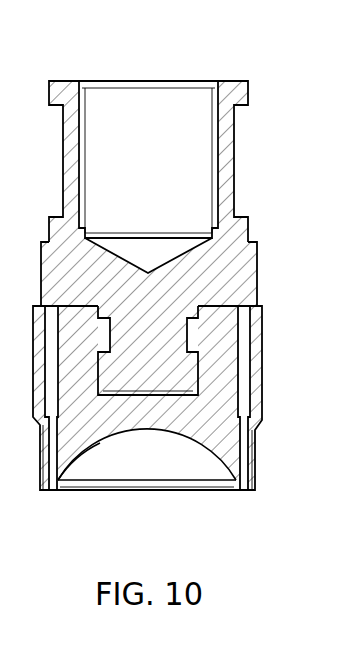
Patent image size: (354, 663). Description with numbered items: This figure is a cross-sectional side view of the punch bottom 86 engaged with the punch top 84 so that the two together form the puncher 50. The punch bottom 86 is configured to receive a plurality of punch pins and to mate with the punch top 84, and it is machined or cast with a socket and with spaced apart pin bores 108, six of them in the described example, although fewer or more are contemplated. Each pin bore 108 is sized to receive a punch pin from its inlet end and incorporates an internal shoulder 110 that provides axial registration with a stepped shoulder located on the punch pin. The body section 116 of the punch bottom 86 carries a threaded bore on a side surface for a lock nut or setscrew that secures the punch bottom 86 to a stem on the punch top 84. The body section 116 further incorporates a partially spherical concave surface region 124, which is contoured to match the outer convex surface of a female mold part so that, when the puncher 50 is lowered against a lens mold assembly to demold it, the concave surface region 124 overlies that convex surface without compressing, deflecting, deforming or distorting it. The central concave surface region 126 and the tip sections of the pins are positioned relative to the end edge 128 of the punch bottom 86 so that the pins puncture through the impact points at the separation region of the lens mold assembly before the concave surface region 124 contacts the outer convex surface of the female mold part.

The puncher 50 is at (128, 65).
The punch top 84 is at (245, 131).
The punch bottom 86 is at (265, 319).
The body section 116 is at (263, 386).
The internal shoulder 110 is at (248, 405).
The pin bores 108 is at (252, 484).
The partially spherical concave surface region 124 is at (155, 430).
The central concave surface region 126 is at (93, 445).
The end edge 128 is at (231, 492).